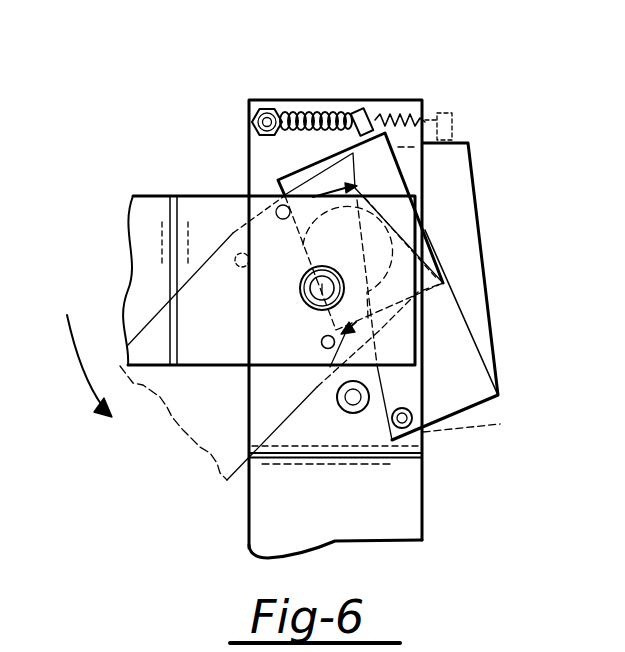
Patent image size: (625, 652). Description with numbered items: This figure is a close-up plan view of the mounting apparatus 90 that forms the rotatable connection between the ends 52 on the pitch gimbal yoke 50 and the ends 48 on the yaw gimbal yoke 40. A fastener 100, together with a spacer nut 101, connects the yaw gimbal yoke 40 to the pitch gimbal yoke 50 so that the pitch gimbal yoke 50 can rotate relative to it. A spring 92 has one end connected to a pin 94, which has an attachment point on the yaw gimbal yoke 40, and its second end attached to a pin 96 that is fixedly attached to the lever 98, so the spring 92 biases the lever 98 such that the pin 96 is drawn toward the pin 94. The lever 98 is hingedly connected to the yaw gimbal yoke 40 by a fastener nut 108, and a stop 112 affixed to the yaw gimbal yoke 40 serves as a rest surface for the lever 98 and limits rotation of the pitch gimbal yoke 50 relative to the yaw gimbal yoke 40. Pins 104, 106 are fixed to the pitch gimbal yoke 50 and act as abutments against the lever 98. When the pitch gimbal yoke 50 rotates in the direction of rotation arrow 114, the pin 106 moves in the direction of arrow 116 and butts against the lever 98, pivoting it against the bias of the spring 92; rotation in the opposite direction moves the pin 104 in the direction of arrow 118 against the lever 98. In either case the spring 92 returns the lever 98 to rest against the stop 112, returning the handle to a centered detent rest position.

The yaw gimbal yoke 40 is at (249, 517).
The ends on the yaw gimbal yoke 48 is at (412, 100).
The pitch gimbal yoke 50 is at (155, 196).
The ends on the pitch gimbal yoke 52 is at (420, 233).
The mounting apparatus 90 is at (490, 233).
The spring 92 is at (313, 110).
The pin 94 is at (250, 108).
The pin 96 is at (357, 112).
The lever 98 is at (455, 418).
The fastener 100 is at (308, 308).
The spacer nut 101 is at (305, 296).
The pin 104 is at (283, 219).
The pin 106 is at (321, 344).
The fastener nut 108 is at (392, 445).
The stop 112 is at (330, 458).
The direction of rotation arrow 114 is at (70, 350).
The direction arrow 116 is at (330, 367).
The arrow 118 is at (318, 197).